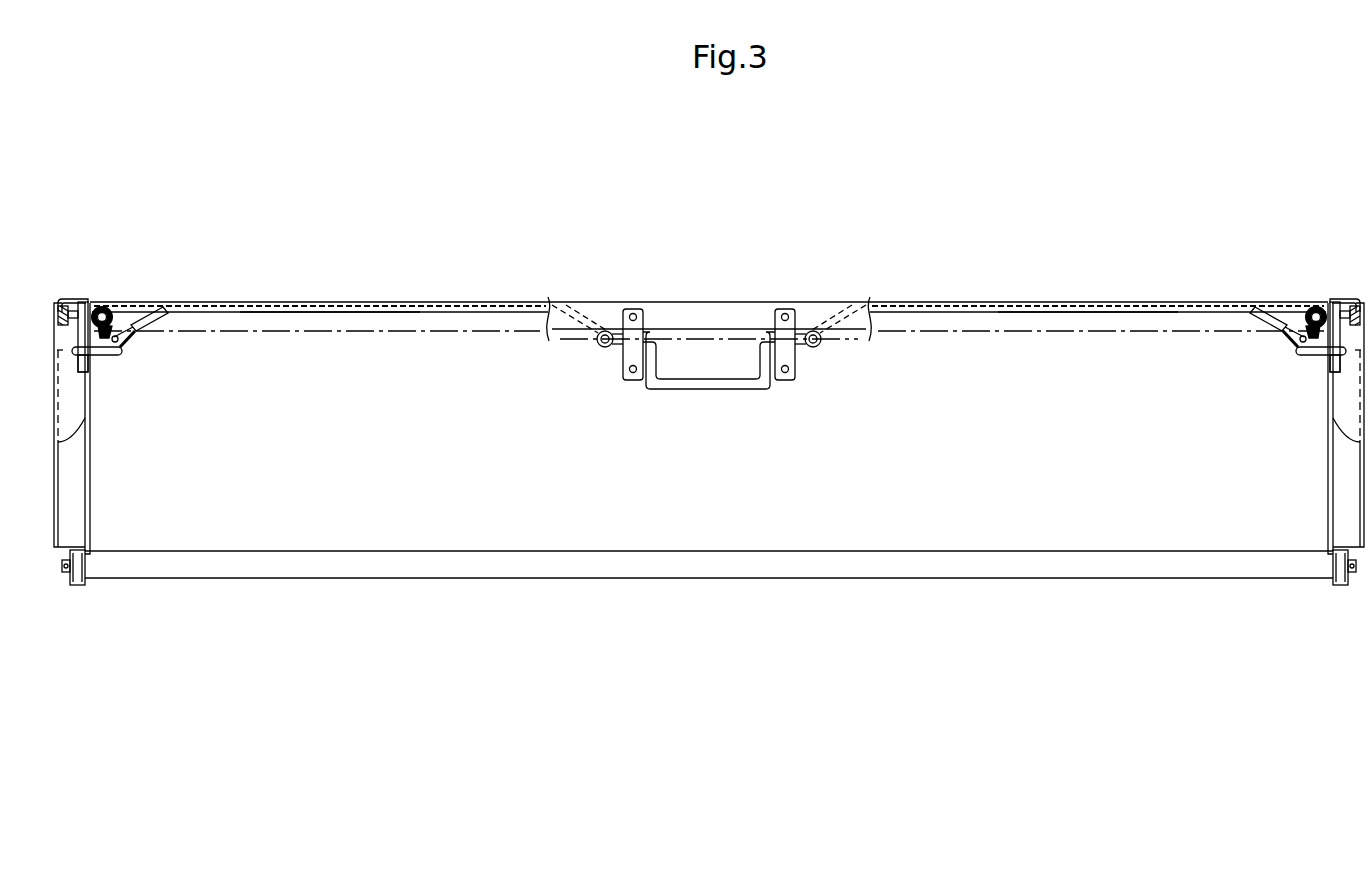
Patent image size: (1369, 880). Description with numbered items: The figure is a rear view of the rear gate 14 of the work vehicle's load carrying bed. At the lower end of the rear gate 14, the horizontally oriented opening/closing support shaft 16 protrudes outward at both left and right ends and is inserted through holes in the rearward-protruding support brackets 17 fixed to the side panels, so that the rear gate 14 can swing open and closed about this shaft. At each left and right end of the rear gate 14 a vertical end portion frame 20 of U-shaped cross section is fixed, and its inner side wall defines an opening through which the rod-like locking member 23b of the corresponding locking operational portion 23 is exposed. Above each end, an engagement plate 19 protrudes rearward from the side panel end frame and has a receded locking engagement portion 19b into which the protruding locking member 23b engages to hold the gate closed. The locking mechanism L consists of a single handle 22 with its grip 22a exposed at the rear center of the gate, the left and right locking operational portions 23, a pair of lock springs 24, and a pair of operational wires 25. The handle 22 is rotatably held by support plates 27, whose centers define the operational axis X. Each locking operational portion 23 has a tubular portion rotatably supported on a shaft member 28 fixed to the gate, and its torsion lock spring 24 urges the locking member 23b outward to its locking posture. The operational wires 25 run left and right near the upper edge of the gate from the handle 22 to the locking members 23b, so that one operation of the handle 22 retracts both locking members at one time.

The rear gate 14 is at (420, 352).
The opening/closing support shaft 16 is at (62, 570).
The support bracket 17 is at (78, 587).
The engagement plate 19 is at (86, 298).
The locking engagement portion 19b is at (92, 358).
The end portion frame 20 is at (76, 470).
The handle 22 is at (709, 326).
The handle 22a is at (713, 390).
The locking operational portion 23 is at (126, 354).
The locking member 23b is at (128, 348).
The lock spring 24 is at (142, 310).
The operational wire 25 is at (326, 308).
The support plate 27 is at (632, 330).
The shaft member 28 is at (105, 306).
The operational axis X is at (850, 338).
The locking mechanism L is at (782, 402).